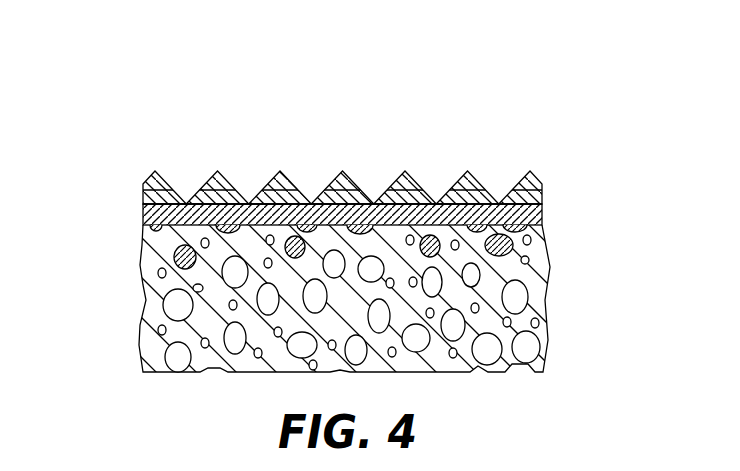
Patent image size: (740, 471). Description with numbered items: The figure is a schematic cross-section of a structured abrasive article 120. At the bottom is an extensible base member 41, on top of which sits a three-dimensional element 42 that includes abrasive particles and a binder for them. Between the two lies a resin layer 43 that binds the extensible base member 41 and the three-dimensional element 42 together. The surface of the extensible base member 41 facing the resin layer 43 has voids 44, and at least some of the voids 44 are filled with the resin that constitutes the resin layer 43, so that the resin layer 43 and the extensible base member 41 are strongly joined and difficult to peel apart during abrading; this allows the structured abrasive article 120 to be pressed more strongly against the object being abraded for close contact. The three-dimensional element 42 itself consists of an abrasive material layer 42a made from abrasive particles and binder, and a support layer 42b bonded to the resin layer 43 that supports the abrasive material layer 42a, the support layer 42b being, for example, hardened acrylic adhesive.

The structured abrasive article 120 is at (528, 82).
The extensible base member 41 is at (545, 288).
The three-dimensional element 42 is at (507, 112).
The abrasive material layer 42a is at (467, 173).
The support layer 42b is at (442, 198).
The resin layer 43 is at (540, 216).
The voids 44 is at (150, 268).